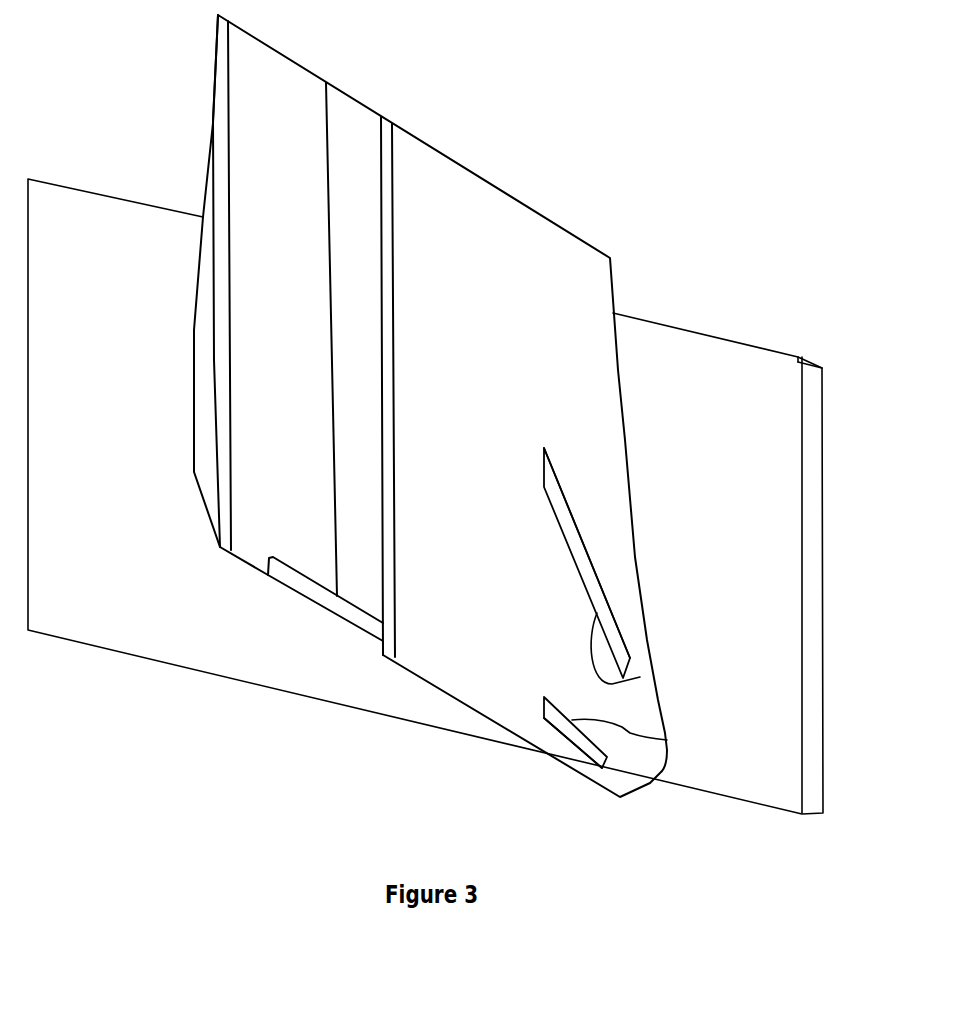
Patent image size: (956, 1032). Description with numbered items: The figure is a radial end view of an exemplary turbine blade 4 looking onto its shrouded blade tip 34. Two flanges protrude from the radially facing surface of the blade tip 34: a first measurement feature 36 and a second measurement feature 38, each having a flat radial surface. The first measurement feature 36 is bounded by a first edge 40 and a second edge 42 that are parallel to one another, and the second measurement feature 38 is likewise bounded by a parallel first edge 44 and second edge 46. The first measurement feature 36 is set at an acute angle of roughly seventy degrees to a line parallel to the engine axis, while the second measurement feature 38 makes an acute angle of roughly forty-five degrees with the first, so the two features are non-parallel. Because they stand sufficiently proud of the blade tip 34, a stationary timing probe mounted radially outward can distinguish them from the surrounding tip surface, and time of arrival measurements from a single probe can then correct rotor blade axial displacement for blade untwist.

The turbine blade 4 is at (182, 112).
The blade tip 34 is at (528, 320).
The first measurement feature 36 is at (590, 580).
The second measurement feature 38 is at (562, 725).
The first edge 40 is at (588, 552).
The second edge 42 is at (640, 677).
The first edge 44 is at (667, 740).
The second edge 46 is at (572, 740).